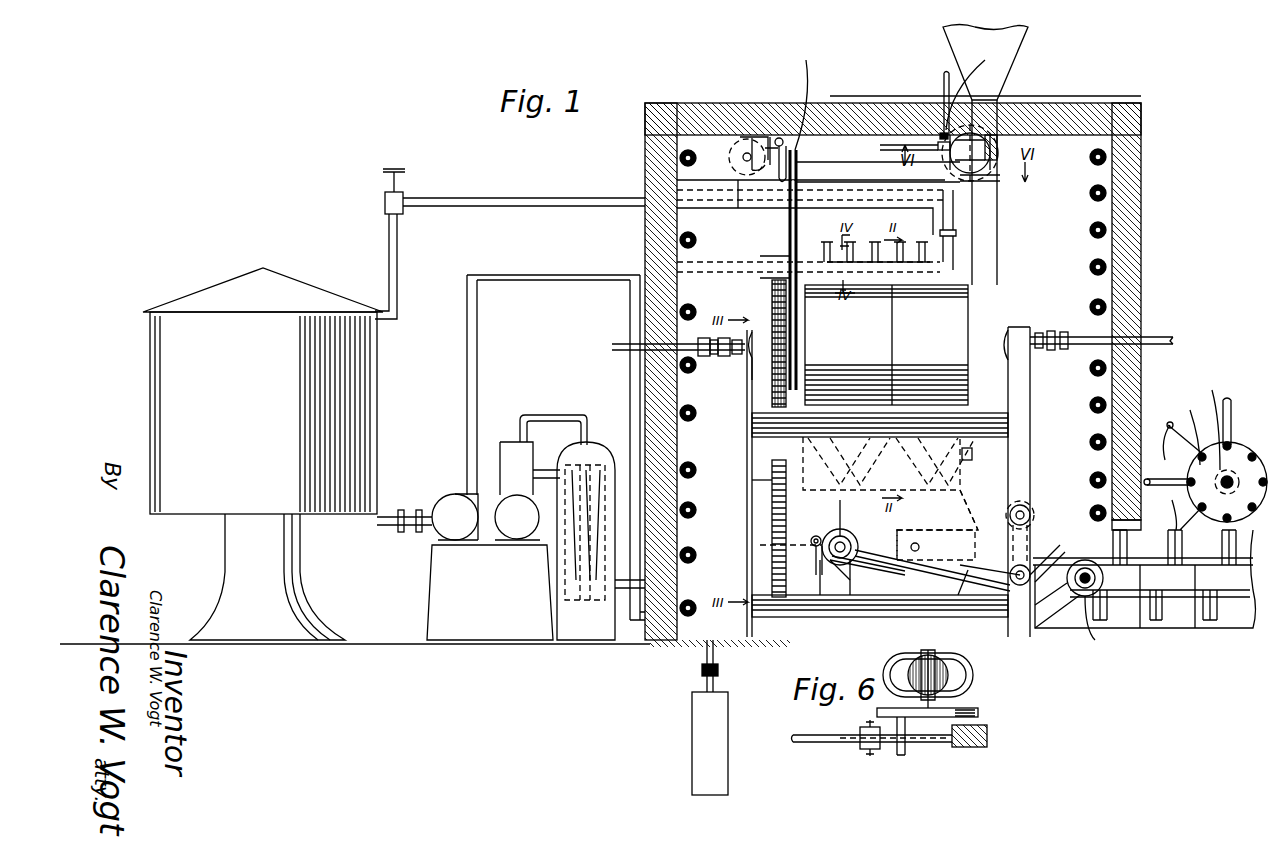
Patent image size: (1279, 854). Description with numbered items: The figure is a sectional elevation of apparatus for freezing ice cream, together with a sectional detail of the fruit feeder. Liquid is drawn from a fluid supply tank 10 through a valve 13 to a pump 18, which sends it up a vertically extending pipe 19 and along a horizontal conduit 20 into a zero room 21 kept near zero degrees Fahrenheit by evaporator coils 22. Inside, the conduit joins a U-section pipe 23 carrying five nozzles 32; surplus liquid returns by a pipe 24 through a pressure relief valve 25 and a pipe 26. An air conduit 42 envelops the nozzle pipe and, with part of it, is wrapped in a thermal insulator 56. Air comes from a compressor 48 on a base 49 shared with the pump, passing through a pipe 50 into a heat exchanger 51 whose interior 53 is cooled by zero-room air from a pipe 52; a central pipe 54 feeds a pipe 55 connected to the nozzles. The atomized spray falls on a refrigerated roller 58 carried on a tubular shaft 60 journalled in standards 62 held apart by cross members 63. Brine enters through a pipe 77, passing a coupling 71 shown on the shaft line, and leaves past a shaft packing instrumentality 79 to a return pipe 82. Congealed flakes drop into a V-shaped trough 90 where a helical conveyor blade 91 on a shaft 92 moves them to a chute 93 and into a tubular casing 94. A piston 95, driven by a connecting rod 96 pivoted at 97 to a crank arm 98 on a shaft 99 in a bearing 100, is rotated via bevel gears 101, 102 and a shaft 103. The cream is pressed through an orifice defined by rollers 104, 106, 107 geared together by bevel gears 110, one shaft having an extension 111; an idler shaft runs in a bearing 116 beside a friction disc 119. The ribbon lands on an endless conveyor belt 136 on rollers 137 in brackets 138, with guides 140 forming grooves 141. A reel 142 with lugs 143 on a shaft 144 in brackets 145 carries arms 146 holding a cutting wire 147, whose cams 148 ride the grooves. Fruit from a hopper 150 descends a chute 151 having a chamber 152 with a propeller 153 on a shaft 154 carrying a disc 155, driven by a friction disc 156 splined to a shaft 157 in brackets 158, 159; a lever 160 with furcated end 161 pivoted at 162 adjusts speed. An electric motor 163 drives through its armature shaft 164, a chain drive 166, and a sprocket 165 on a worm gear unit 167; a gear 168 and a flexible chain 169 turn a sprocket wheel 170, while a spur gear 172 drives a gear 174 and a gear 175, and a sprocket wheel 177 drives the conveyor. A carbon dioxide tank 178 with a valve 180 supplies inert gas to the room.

In FIG. 1, the fluid supply tank 10 is at (370, 370).
In FIG. 1, the valve 13 is at (392, 528).
In FIG. 1, the pump 18 is at (442, 497).
In FIG. 1, the vertically extending pipe 19 is at (467, 352).
In FIG. 1, the horizontally disposed conduit 20 is at (520, 275).
In FIG. 1, the zero room 21 is at (645, 142).
In FIG. 1, the evaporator coils 22 is at (690, 372).
In FIG. 1, the U-section pipe 23 is at (738, 200).
In FIG. 1, the return pipe 24 is at (473, 198).
In FIG. 1, the pressure relief valve 25 is at (385, 200).
In FIG. 1, the pipe 26 is at (397, 272).
In FIG. 1, the nozzles 32 is at (880, 262).
In FIG. 1, the air conduit 42 is at (760, 262).
In FIG. 1, the air compressor 48 is at (517, 491).
In FIG. 1, the base 49 is at (490, 592).
In FIG. 1, the air pipe 50 is at (548, 418).
In FIG. 1, the heat exchanger 51 is at (598, 450).
In FIG. 1, the pipe 52 is at (650, 638).
In FIG. 1, the exchanger interior 53 is at (565, 486).
In FIG. 1, the central pipe 54 is at (580, 545).
In FIG. 1, the air supply pipe 55 is at (630, 306).
In FIG. 1, the thermal insulator 56 is at (690, 208).
In FIG. 1, the roller 58 is at (886, 345).
In FIG. 1, the tubular shaft 60 is at (752, 332).
In FIG. 1, the standards 62 is at (747, 385).
In FIG. 1, the cross members 63 is at (1008, 405).
In FIG. 1, the coupling 71 is at (722, 354).
In FIG. 1, the brine pipe 77 is at (614, 343).
In FIG. 1, the shaft packing confining instrumentality 79 is at (1040, 332).
In FIG. 1, the brine return pipe 82 is at (1162, 336).
In FIG. 1, the V-shaped trough 90 is at (890, 498).
In FIG. 1, the helical conveyor blade 91 is at (849, 459).
In FIG. 1, the conveyor shaft 92 is at (935, 459).
In FIG. 1, the chute 93 is at (972, 505).
In FIG. 1, the tubular casing 94 is at (927, 571).
In FIG. 1, the piston 95 is at (936, 536).
In FIG. 1, the connecting rod 96 is at (855, 538).
In FIG. 1, the pivot 97 is at (917, 545).
In FIG. 1, the crank arm 98 is at (815, 555).
In FIG. 1, the crank shaft 99 is at (850, 575).
In FIG. 1, the bearing 100 is at (842, 600).
In FIG. 1, the bevel gear 101 is at (849, 517).
In FIG. 1, the bevel gear 102 is at (817, 536).
In FIG. 1, the shaft 103 is at (800, 545).
In FIG. 1, the roller 104 is at (1034, 512).
In FIG. 1, the roller 106 is at (990, 574).
In FIG. 1, the roller 107 is at (1030, 540).
In FIG. 1, the bevel gears 110 is at (1027, 500).
In FIG. 1, the shaft extension 111 is at (958, 598).
In FIG. 1, the bearing 116 is at (897, 572).
In FIG. 1, the friction disc 119 is at (714, 650).
In FIG. 1, the endless conveyor belt 136 is at (1182, 600).
In FIG. 1, the conveyor roller 137 is at (1088, 620).
In FIG. 1, the brackets 138 is at (1040, 615).
In FIG. 1, the guides 140 is at (1113, 543).
In FIG. 1, the grooves 141 is at (1093, 590).
In FIG. 1, the reel 142 is at (1237, 444).
In FIG. 1, the lugs 143 is at (1189, 427).
In FIG. 1, the reel shaft 144 is at (1212, 418).
In FIG. 1, the brackets 145 is at (1232, 613).
In FIG. 1, the arms 146 is at (1179, 512).
In FIG. 1, the cutting wire 147 is at (1227, 400).
In FIG. 1, the cam 148 is at (1148, 478).
In FIG. 1, the hopper 150 is at (1020, 48).
In FIG. 1, the chute 151 is at (1000, 108).
In FIG. 1, the chamber 152 is at (985, 178).
In FIG. 6, the chamber 152 is at (886, 668).
In FIG. 1, the propeller 153 is at (995, 160).
In FIG. 6, the propeller 153 is at (950, 675).
In FIG. 1, the propeller shaft 154 is at (985, 170).
In FIG. 6, the propeller shaft 154 is at (940, 672).
In FIG. 1, the disc 155 is at (1000, 180).
In FIG. 6, the disc 155 is at (978, 712).
In FIG. 1, the friction disc 156 is at (990, 85).
In FIG. 6, the friction disc 156 is at (901, 755).
In FIG. 1, the drive shaft 157 is at (858, 162).
In FIG. 6, the drive shaft 157 is at (813, 742).
In FIG. 1, the bracket 158 is at (1000, 140).
In FIG. 6, the bracket 158 is at (975, 747).
In FIG. 1, the bracket 159 is at (804, 95).
In FIG. 1, the lever 160 is at (944, 95).
In FIG. 1, the furcated extremity 161 is at (938, 147).
In FIG. 6, the furcated extremity 161 is at (870, 756).
In FIG. 1, the lever pivot 162 is at (940, 136).
In FIG. 1, the electric motor 163 is at (752, 138).
In FIG. 1, the armature shaft 164 is at (747, 165).
In FIG. 1, the sprocket 165 is at (780, 138).
In FIG. 1, the chain drive 166 is at (770, 137).
In FIG. 1, the worm gear unit 167 is at (790, 138).
In FIG. 1, the gear 168 is at (797, 155).
In FIG. 1, the flexible chain 169 is at (790, 225).
In FIG. 1, the sprocket wheel 170 is at (786, 336).
In FIG. 1, the spur gear 172 is at (797, 316).
In FIG. 1, the gear 174 is at (752, 478).
In FIG. 1, the gear 175 is at (772, 548).
In FIG. 1, the sprocket wheel 177 is at (1103, 578).
In FIG. 1, the carbon dioxide tank 178 is at (705, 745).
In FIG. 1, the valve 180 is at (702, 670).